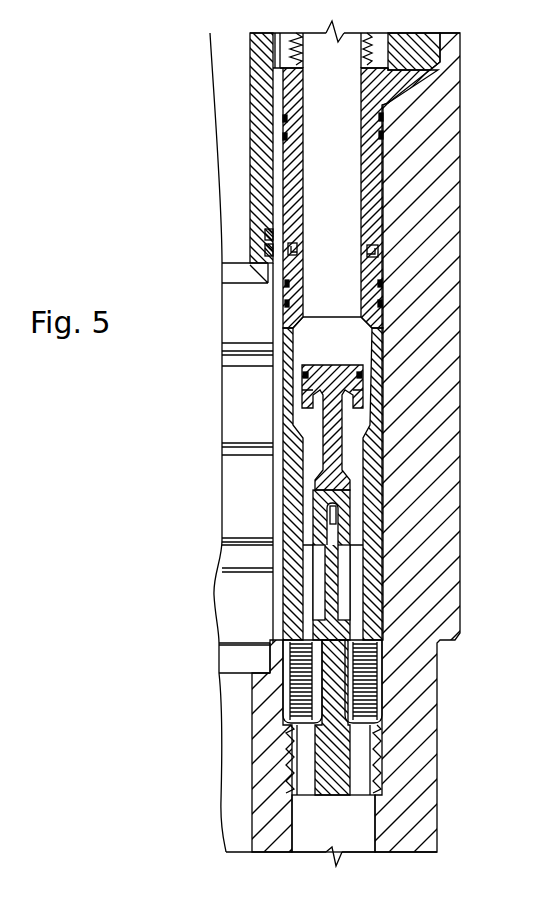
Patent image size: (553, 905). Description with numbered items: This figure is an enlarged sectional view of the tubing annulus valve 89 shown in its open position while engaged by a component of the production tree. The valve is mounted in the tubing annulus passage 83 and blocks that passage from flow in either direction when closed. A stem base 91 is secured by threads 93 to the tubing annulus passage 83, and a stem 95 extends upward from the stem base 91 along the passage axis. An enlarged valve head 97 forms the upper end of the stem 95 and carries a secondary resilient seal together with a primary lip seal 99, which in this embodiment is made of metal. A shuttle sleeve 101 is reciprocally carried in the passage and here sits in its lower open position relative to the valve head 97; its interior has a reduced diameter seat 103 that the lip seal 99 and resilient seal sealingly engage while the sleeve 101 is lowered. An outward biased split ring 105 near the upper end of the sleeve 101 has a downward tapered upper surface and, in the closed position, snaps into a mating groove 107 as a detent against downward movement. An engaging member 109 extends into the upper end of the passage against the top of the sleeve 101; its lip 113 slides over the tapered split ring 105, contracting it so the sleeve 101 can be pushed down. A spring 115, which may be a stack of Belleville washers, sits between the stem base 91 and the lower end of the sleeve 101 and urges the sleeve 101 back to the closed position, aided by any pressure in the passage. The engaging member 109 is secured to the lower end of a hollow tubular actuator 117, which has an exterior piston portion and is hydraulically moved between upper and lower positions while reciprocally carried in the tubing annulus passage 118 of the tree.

The tubing annulus passage 83 is at (346, 837).
The tubing annulus valve 89 is at (280, 488).
The stem base 91 is at (293, 750).
The threads 93 is at (291, 779).
The stem 95 is at (284, 660).
The valve head 97 is at (315, 366).
The lip seal 99 is at (308, 400).
The shuttle sleeve 101 is at (296, 296).
The seat 103 is at (316, 463).
The split ring 105 is at (267, 247).
The groove 107 is at (280, 187).
The engaging member 109 is at (292, 150).
The lip 113 is at (378, 247).
The spring 115 is at (292, 705).
The actuator 117 is at (287, 50).
The tubing annulus passage in tree 118 is at (330, 107).